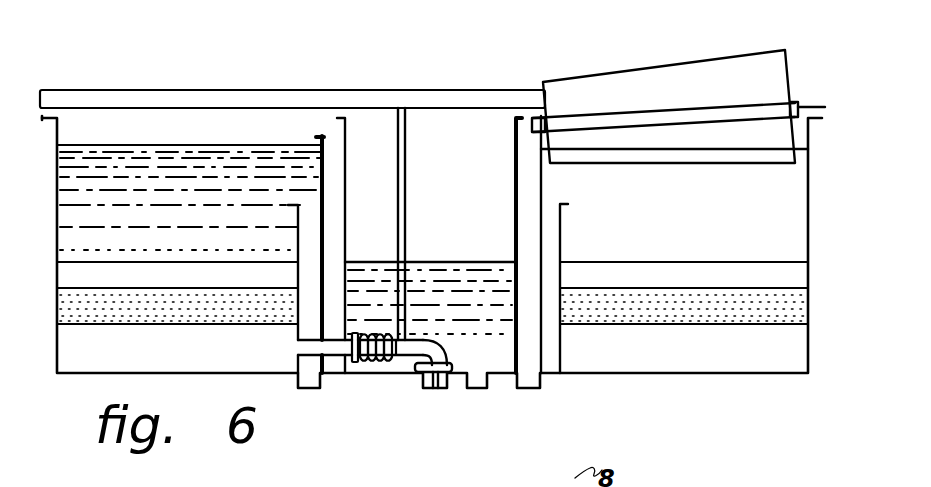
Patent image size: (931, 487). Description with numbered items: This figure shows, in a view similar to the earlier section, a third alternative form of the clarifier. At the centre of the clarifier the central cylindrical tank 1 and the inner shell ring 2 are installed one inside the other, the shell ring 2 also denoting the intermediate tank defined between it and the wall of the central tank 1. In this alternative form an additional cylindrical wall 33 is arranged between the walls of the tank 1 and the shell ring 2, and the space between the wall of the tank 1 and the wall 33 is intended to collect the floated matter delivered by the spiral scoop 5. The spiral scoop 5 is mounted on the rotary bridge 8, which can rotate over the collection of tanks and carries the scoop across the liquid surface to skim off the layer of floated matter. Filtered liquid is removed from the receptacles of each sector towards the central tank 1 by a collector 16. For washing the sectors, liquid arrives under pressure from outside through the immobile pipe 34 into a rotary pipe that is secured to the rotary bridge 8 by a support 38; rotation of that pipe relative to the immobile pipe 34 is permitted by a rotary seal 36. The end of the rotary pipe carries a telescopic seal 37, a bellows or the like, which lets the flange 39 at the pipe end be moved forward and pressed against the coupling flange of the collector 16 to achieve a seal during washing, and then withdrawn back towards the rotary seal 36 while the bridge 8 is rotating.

The rotary bridge 8 is at (338, 98).
The central cylindrical tank 1 is at (513, 167).
The spiral scoop 5 is at (740, 163).
The additional cylindrical wall 33 is at (542, 173).
The inner shell ring 2 is at (560, 238).
The support 38 is at (405, 218).
The telescopic seal 37 is at (370, 337).
The rotary seal 36 is at (433, 340).
The collector 16 is at (330, 350).
The flange 39 is at (357, 373).
The immobile pipe 34 is at (435, 388).